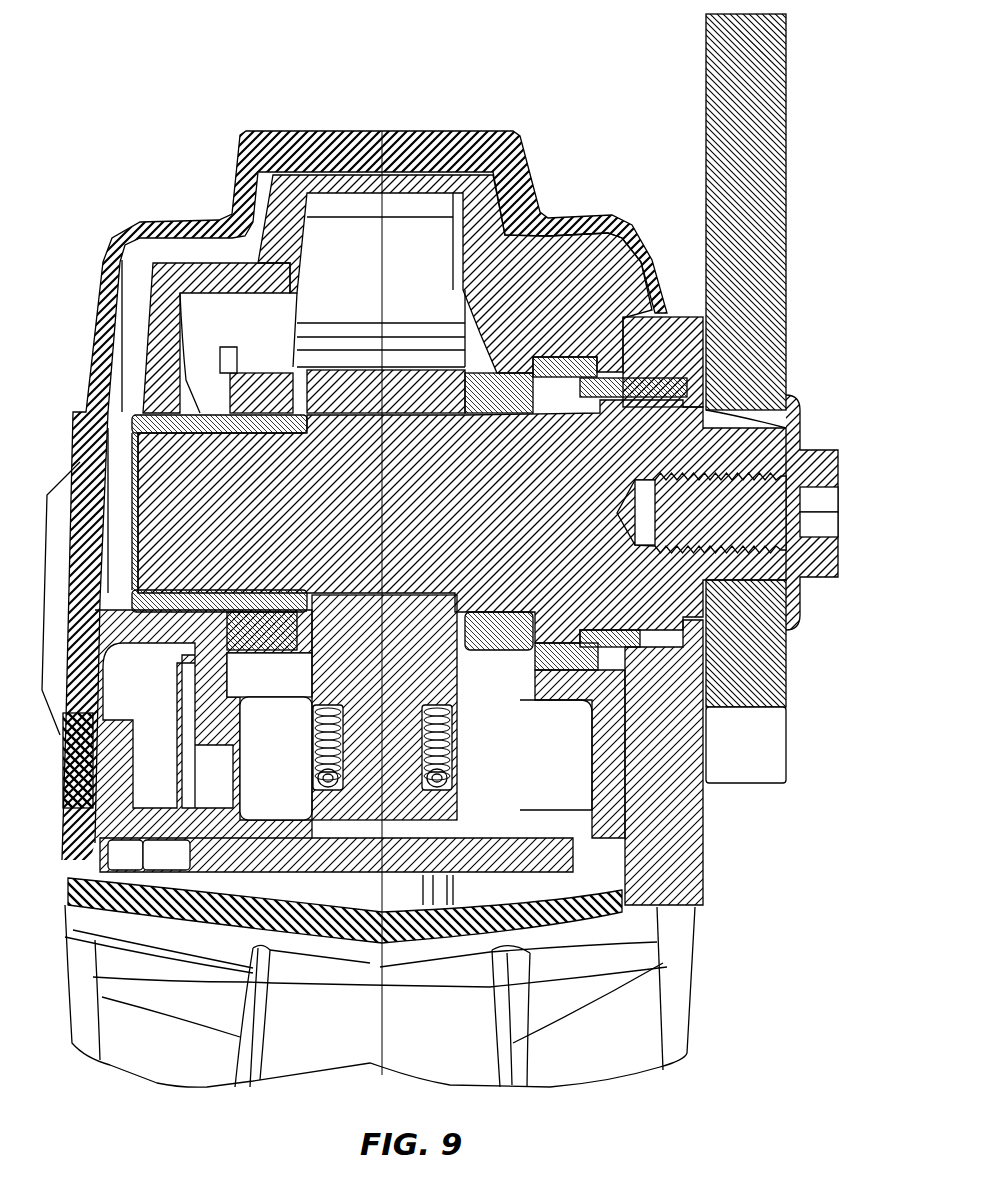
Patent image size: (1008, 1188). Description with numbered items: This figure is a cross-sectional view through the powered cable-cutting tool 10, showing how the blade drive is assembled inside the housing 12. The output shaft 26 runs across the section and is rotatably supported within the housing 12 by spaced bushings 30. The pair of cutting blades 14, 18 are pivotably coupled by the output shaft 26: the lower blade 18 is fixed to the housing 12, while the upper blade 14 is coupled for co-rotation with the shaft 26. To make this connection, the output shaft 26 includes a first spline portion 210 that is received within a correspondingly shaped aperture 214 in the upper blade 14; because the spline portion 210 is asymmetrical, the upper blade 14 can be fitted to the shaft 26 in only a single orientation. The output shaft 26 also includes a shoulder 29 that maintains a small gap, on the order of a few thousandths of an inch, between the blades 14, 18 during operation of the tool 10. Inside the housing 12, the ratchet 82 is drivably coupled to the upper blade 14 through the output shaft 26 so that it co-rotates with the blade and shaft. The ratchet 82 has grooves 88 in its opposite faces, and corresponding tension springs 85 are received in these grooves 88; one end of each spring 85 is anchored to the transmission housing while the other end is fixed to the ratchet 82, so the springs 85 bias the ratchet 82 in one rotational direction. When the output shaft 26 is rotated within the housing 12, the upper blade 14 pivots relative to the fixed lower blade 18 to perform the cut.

The powered cable-cutting tool 10 is at (94, 174).
The housing 12 is at (447, 130).
The upper blade 14 is at (750, 118).
The lower blade 18 is at (675, 838).
The output shaft 26 is at (483, 578).
The shoulder 29 is at (717, 418).
The bushings 30 is at (232, 372).
The ratchet 82 is at (407, 670).
The tension springs 85 is at (316, 742).
The grooves 88 is at (312, 795).
The first spline portion 210 is at (752, 420).
The shaped aperture 214 is at (782, 557).